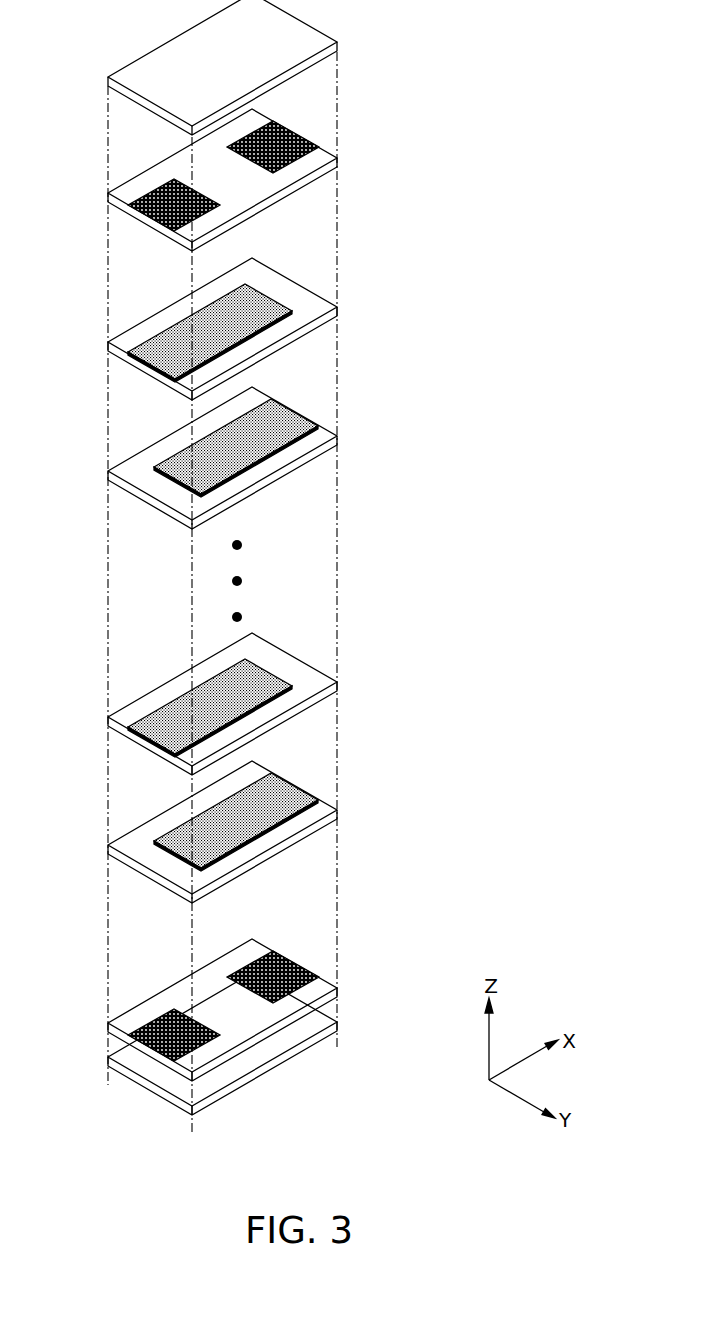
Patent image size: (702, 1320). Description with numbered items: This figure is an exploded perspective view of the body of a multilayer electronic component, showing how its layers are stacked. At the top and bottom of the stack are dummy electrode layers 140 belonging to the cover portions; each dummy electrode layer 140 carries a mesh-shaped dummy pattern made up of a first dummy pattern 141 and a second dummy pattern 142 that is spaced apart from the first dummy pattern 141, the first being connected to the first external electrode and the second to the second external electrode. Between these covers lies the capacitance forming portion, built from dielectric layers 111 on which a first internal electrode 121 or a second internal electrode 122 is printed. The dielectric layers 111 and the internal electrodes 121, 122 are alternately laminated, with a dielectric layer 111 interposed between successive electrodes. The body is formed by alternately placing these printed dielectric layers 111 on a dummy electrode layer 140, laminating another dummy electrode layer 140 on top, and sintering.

The dielectric layer 111 is at (307, 40).
The first internal electrode 121 is at (162, 360).
The second internal electrode 122 is at (280, 420).
The dummy electrode layer 140 is at (302, 574).
The first dummy pattern 141 is at (220, 201).
The second dummy pattern 142 is at (283, 127).